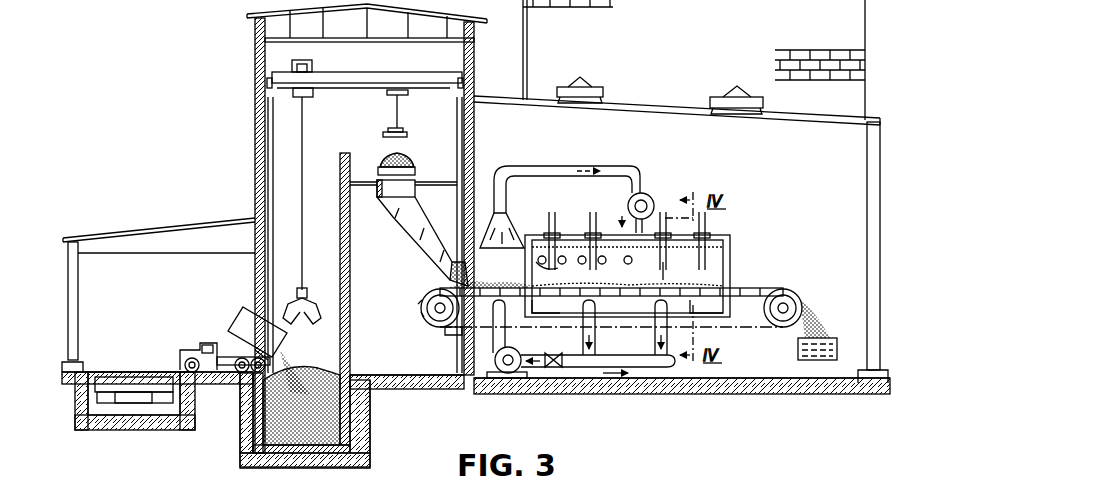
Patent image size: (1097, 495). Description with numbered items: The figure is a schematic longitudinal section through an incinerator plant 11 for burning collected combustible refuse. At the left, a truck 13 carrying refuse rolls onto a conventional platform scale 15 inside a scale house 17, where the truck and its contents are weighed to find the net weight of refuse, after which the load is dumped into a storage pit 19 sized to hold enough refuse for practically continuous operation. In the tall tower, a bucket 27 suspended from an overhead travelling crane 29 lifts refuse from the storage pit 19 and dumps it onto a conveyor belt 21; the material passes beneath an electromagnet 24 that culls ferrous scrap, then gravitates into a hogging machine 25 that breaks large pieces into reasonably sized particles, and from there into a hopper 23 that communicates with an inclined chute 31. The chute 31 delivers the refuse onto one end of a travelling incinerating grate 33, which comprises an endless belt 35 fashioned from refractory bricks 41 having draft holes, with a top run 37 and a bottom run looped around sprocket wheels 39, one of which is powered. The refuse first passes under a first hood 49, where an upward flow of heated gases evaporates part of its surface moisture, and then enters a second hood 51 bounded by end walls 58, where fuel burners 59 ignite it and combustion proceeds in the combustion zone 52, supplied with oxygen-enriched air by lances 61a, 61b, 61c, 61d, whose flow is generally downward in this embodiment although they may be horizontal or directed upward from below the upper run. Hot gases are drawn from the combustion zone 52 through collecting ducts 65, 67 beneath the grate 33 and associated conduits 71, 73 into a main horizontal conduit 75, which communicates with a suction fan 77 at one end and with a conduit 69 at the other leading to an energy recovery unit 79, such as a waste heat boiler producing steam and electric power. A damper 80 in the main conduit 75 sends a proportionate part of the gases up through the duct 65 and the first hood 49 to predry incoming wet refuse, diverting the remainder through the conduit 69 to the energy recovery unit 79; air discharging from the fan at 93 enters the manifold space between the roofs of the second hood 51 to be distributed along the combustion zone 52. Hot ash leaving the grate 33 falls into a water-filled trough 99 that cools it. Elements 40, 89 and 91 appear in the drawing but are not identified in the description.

The incinerator plant 11 is at (237, 146).
The truck 13 is at (192, 347).
The platform scale 15 is at (147, 372).
The scale house 17 is at (143, 290).
The storage pit 19 is at (305, 413).
The conveyor belt 21 is at (408, 160).
The hopper 23 is at (413, 203).
The electromagnet 24 is at (401, 131).
The hogging machine 25 is at (383, 190).
The bucket 27 is at (303, 290).
The overhead travelling crane 29 is at (312, 64).
The inclined chute 31 is at (410, 225).
The travelling incinerating grate 33 is at (420, 329).
The endless belt 35 is at (421, 297).
The top run 37 is at (538, 300).
The sprocket wheel 39 is at (453, 333).
The pulley 40 is at (425, 310).
The refractory bricks 41 is at (432, 288).
The first hood 49 is at (503, 227).
The second hood 51 is at (577, 233).
The combustion zone 52 is at (618, 257).
The end walls 58 is at (683, 300).
The fuel burners 59 is at (530, 263).
The lance 61a is at (552, 212).
The lance 61b is at (593, 212).
The lance 61c is at (663, 212).
The lance 61d is at (703, 218).
The collecting duct 65 is at (510, 305).
The collecting duct 67 is at (663, 282).
The conduit 69 is at (668, 367).
The conduit 71 is at (595, 312).
The conduit 73 is at (658, 312).
The main horizontal conduit 75 is at (648, 357).
The suction fan 77 is at (508, 375).
The energy recovery unit 79 is at (633, 68).
The damper 80 is at (553, 367).
The blower 89 is at (643, 193).
The exhaust duct 91 is at (530, 173).
The fan discharge 93 is at (634, 205).
The trough 99 is at (828, 337).